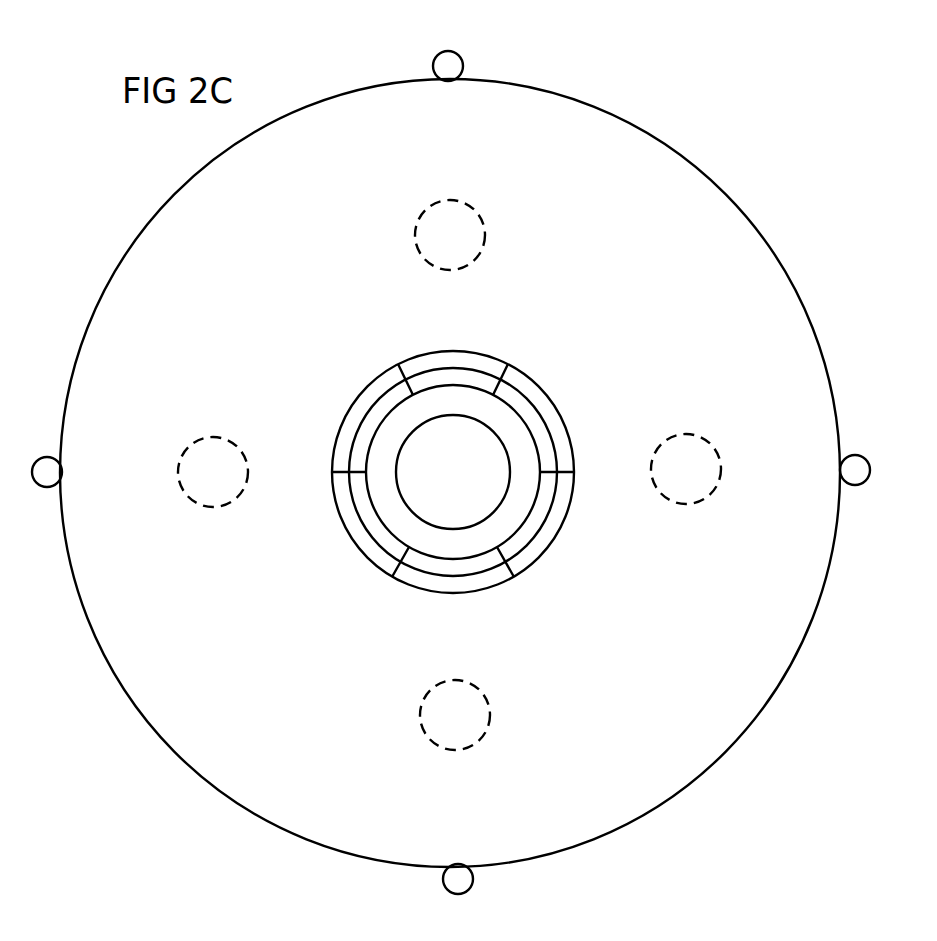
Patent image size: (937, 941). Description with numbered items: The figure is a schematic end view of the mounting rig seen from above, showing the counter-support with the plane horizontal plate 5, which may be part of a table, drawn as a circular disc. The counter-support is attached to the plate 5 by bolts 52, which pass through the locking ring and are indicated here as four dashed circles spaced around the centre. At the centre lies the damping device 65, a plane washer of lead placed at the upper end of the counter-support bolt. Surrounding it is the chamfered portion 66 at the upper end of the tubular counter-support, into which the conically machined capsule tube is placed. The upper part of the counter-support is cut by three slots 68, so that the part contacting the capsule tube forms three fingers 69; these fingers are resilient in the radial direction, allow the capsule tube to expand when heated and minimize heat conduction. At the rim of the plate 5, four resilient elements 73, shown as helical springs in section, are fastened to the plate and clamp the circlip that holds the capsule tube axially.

The plane horizontal plate 5 is at (683, 752).
The bolts 52 is at (462, 205).
The damping device 65 is at (450, 414).
The chamfered portion 66 is at (378, 408).
The slots 68 is at (445, 338).
The fingers 69 is at (348, 432).
The resilient elements 73 is at (452, 53).